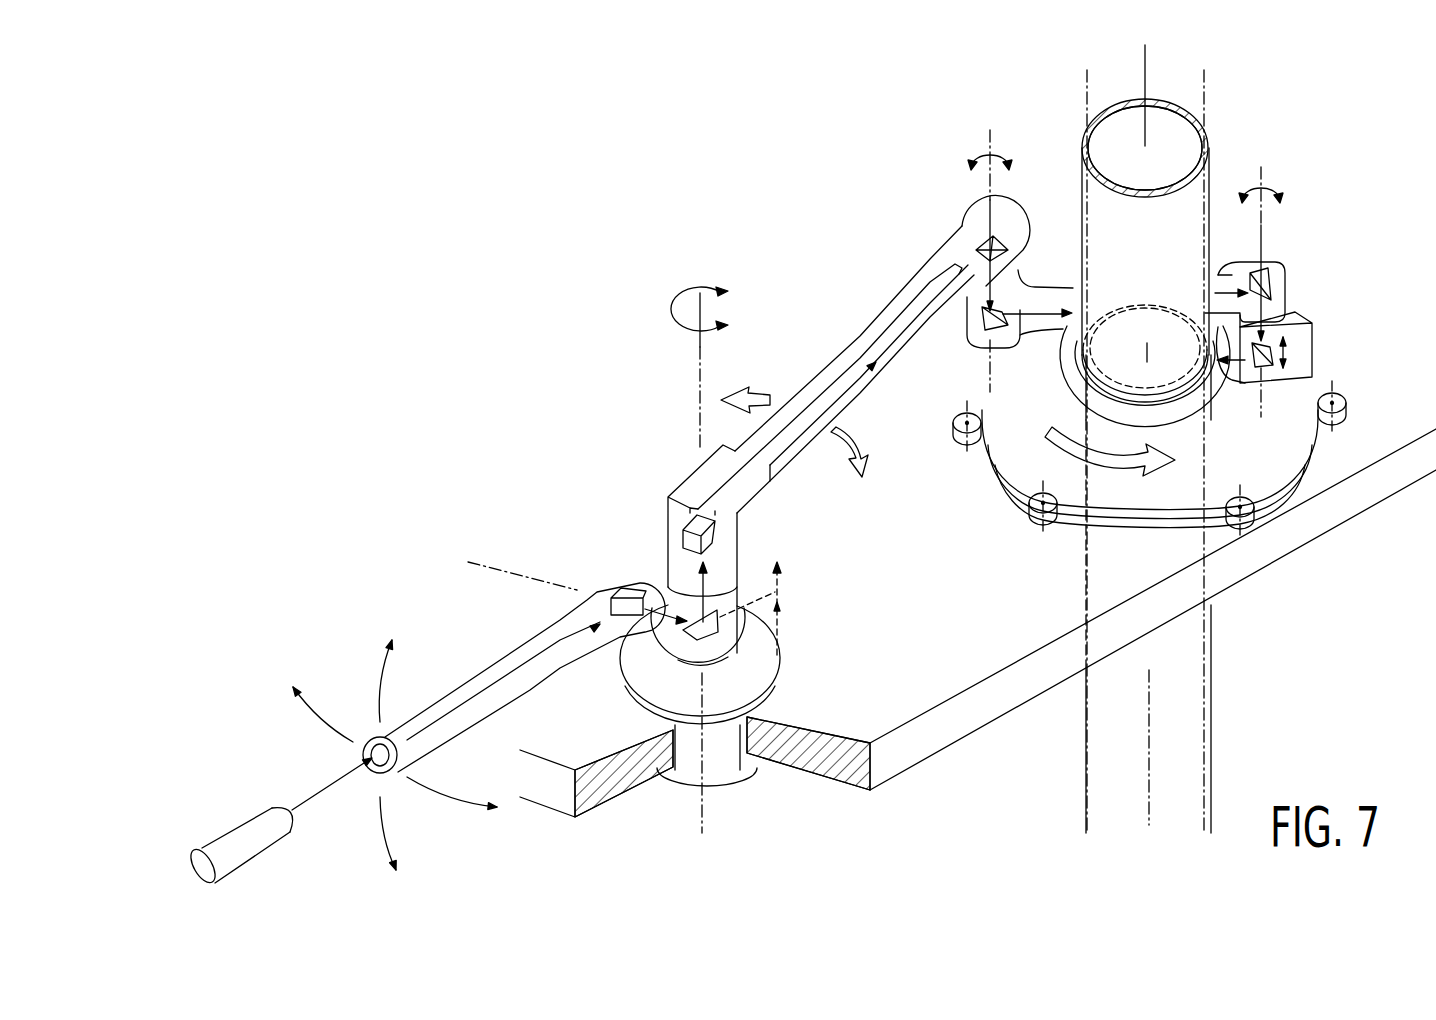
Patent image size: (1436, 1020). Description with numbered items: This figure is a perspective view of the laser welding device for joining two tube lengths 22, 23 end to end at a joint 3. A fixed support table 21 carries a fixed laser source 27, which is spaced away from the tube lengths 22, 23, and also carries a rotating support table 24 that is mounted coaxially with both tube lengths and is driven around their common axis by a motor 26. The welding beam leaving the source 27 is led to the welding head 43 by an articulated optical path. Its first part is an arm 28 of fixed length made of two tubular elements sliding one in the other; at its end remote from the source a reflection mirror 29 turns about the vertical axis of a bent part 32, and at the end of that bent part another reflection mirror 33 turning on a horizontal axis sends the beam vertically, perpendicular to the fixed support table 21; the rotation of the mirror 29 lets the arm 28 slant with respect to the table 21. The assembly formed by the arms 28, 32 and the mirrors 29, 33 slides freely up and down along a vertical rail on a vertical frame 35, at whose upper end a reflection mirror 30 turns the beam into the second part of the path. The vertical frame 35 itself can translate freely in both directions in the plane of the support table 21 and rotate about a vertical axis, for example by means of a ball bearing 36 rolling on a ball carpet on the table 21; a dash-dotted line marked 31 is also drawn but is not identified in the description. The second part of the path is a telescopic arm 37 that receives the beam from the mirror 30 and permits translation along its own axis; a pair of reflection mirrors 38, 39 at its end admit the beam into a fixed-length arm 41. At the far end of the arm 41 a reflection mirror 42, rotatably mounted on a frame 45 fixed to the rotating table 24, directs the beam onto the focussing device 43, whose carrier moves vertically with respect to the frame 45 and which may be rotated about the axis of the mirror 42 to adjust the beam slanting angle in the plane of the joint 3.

The joint 3 is at (1187, 406).
The fixed support table 21 is at (887, 763).
The tube length 22 is at (1212, 722).
The tube length 23 is at (1185, 197).
The rotating support table 24 is at (1014, 462).
The motor 26 is at (740, 650).
The fixed laser source 27 is at (246, 822).
The arm 28 is at (464, 680).
The reflection mirror 29 is at (621, 590).
The reflection mirror 30 is at (683, 530).
The pivot axis 31 is at (492, 562).
The bent part 32 is at (630, 656).
The reflection mirror 33 is at (720, 632).
The vertical frame 35 is at (740, 556).
The ball bearing 36 is at (722, 718).
The telescopic arm 37 is at (857, 339).
The reflection mirror 38 is at (980, 238).
The reflection mirror 39 is at (975, 330).
The arm 41 is at (1218, 275).
The reflection mirror 42 is at (1272, 283).
The welding head 43 is at (1288, 357).
The frame 45 is at (1305, 314).